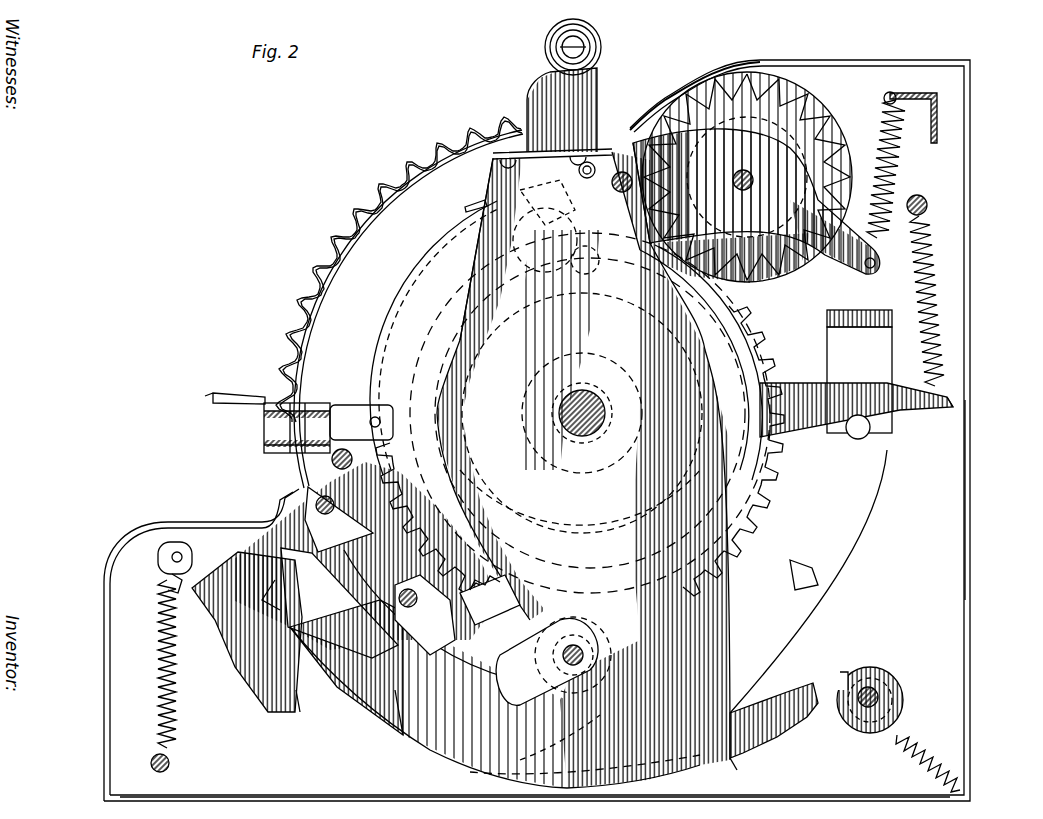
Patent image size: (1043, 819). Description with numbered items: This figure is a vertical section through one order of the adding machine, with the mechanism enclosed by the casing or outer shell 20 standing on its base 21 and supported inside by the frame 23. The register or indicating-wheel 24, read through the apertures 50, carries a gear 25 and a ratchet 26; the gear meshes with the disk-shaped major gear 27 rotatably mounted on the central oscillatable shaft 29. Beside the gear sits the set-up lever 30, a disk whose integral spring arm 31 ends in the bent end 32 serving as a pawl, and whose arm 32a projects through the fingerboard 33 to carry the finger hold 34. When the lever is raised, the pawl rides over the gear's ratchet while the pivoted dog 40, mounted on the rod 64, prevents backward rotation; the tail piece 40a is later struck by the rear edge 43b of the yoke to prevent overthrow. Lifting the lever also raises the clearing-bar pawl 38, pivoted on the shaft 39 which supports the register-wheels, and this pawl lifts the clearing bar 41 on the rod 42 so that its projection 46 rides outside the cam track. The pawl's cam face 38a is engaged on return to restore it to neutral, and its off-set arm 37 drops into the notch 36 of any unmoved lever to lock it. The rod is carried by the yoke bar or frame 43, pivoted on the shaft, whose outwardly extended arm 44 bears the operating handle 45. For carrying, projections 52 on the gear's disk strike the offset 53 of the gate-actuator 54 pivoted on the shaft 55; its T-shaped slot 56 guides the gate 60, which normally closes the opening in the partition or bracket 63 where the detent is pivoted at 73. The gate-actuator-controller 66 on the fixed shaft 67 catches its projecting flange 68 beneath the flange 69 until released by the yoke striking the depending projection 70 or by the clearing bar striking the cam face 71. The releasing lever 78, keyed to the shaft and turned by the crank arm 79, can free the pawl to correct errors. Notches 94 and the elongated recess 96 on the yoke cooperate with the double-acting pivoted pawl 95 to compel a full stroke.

The casing or outer shell 20 is at (108, 580).
The base 21 is at (218, 797).
The frame 23 is at (968, 505).
The register or indicating-wheel 24 is at (768, 95).
The gear 25 is at (800, 112).
The ratchet 26 is at (715, 78).
The major gear 27 is at (778, 470).
The central oscillatable shaft 29 is at (586, 436).
The set-up lever 30 is at (412, 300).
The spring arm 31 is at (650, 278).
The bent end (pawl) 32 is at (582, 263).
The arm 32a is at (336, 403).
The fingerboard 33 is at (352, 222).
The finger hold 34 is at (235, 393).
The notch 36 is at (545, 240).
The off-set arm 37 is at (547, 202).
The clearing-bar pawl 38 is at (805, 250).
The cam face 38a is at (655, 150).
The shaft 39 is at (743, 169).
The pivoted dog (pawl) 40 is at (790, 378).
The tail piece 40a is at (958, 403).
The clearing bar 41 is at (578, 170).
The rod 42 is at (603, 150).
The yoke bar or frame 43 is at (380, 705).
The rear edge of the yoke 43b is at (735, 760).
The outwardly extended arm 44 is at (530, 95).
The operating handle 45 is at (601, 47).
The projection 46 is at (470, 205).
The apertures 50 is at (655, 100).
The projections 52 is at (566, 655).
The offset 53 is at (490, 604).
The gate-actuator 54 is at (500, 650).
The shaft 55 is at (408, 612).
The T-shaped slot 56 is at (590, 620).
The gate 60 is at (552, 730).
The partition or bracket 63 is at (868, 510).
The transversely extending rod or shaft 64 is at (868, 432).
The gate-actuator-controller 66 is at (222, 640).
The fixed shaft 67 is at (339, 519).
The projecting flange 68 is at (262, 586).
The projecting flange 69 is at (339, 603).
The depending projection 70 is at (300, 712).
The cam face 71 is at (356, 405).
The pivot of detent 73 is at (607, 568).
The releasing lever 78 is at (487, 468).
The crank arm 79 is at (610, 378).
The notches 94 is at (790, 725).
The double-acting pivoted pawl 95 is at (878, 686).
The elongated recess 96 is at (405, 740).